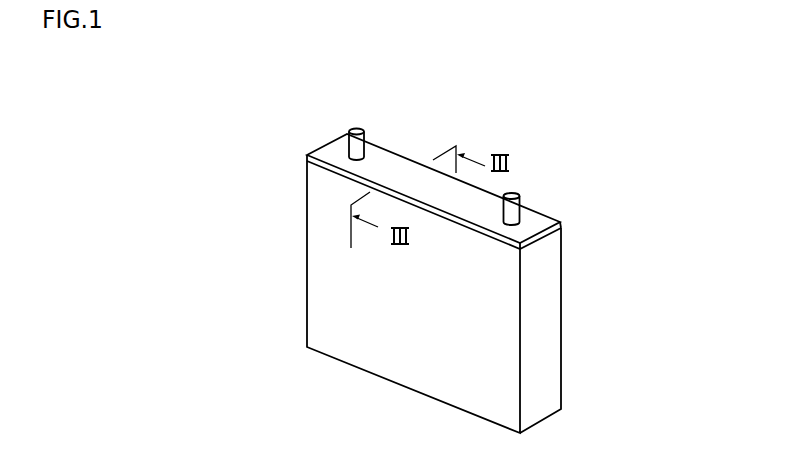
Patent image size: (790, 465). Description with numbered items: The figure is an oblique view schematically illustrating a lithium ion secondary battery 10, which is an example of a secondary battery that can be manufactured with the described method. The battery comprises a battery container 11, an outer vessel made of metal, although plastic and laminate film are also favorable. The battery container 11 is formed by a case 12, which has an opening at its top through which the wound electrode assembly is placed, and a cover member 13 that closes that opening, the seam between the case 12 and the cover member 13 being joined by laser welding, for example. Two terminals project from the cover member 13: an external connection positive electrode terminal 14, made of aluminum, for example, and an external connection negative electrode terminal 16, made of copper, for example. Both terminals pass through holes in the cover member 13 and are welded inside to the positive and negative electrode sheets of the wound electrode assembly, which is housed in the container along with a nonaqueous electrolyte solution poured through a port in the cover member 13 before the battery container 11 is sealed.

The lithium ion secondary battery 10 is at (668, 126).
The battery container 11 is at (306, 302).
The case 12 is at (548, 282).
The cover member 13 is at (542, 222).
The external connection positive electrode terminal 14 is at (513, 193).
The external connection negative electrode terminal 16 is at (357, 132).